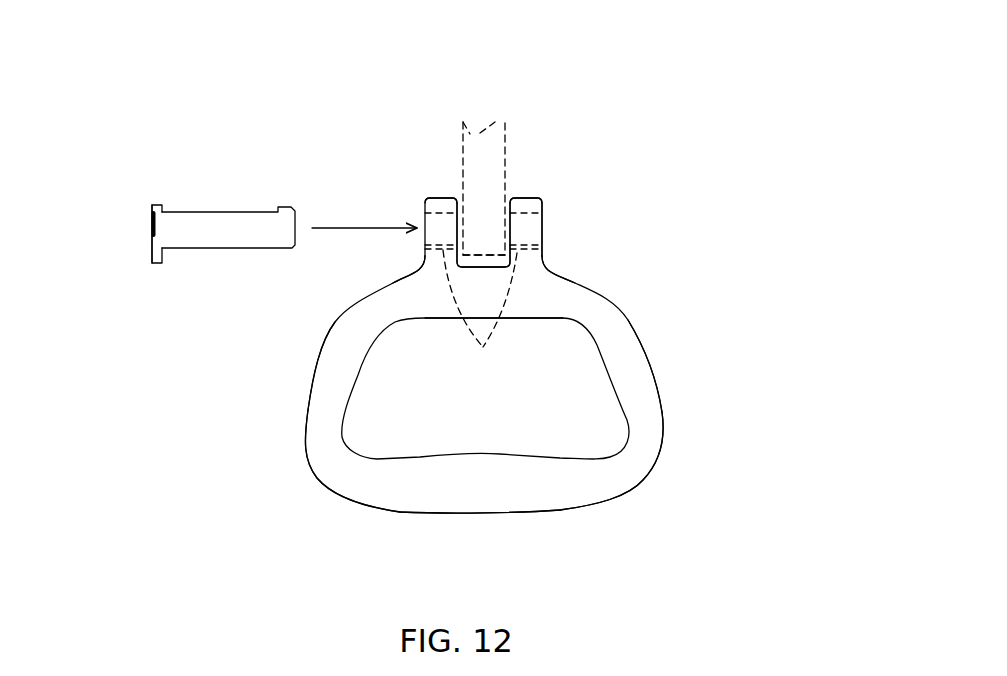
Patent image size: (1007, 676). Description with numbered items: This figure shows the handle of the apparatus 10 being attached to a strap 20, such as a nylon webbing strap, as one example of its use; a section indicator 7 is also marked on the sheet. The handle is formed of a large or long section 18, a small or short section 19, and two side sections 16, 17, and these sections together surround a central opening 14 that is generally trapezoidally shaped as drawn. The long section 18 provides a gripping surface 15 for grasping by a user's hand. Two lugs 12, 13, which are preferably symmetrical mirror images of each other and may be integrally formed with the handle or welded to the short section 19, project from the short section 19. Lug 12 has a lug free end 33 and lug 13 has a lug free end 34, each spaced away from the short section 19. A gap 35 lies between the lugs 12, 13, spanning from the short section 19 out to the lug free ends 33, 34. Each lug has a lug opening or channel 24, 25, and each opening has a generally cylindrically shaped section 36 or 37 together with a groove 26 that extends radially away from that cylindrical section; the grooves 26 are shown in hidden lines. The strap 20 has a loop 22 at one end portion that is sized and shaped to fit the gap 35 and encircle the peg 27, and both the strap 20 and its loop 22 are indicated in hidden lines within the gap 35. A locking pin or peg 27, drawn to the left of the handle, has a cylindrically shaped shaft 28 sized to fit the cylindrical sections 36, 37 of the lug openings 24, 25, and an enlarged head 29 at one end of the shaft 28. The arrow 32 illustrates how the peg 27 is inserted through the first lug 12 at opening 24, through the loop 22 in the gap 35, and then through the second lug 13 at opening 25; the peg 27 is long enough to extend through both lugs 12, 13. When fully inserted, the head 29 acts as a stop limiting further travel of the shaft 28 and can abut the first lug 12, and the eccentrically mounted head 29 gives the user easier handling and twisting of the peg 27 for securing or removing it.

The section line 7- 7 is at (787, 270).
The anchor assembly 10 is at (408, 83).
The lug 12 is at (423, 204).
The lug 13 is at (543, 207).
The central opening 14 is at (518, 390).
The gripping surface 15 is at (375, 482).
The side section 16 is at (335, 362).
The side section 17 is at (642, 382).
The long section 18 is at (437, 512).
The short section 19 is at (427, 320).
The strap 20 is at (512, 147).
The loop 22 is at (483, 225).
The lug opening 24 is at (425, 247).
The lug opening 25 is at (543, 233).
The groove 26 is at (480, 313).
The peg 27 is at (157, 196).
The shaft 28 is at (237, 212).
The head 29 is at (152, 263).
The arrow 32 is at (352, 228).
The lug free end 33 is at (440, 200).
The lug free end 34 is at (543, 200).
The gap 35 is at (460, 197).
The cylindrically shaped section 36 is at (530, 267).
The cylindrically shaped section 37 is at (438, 258).